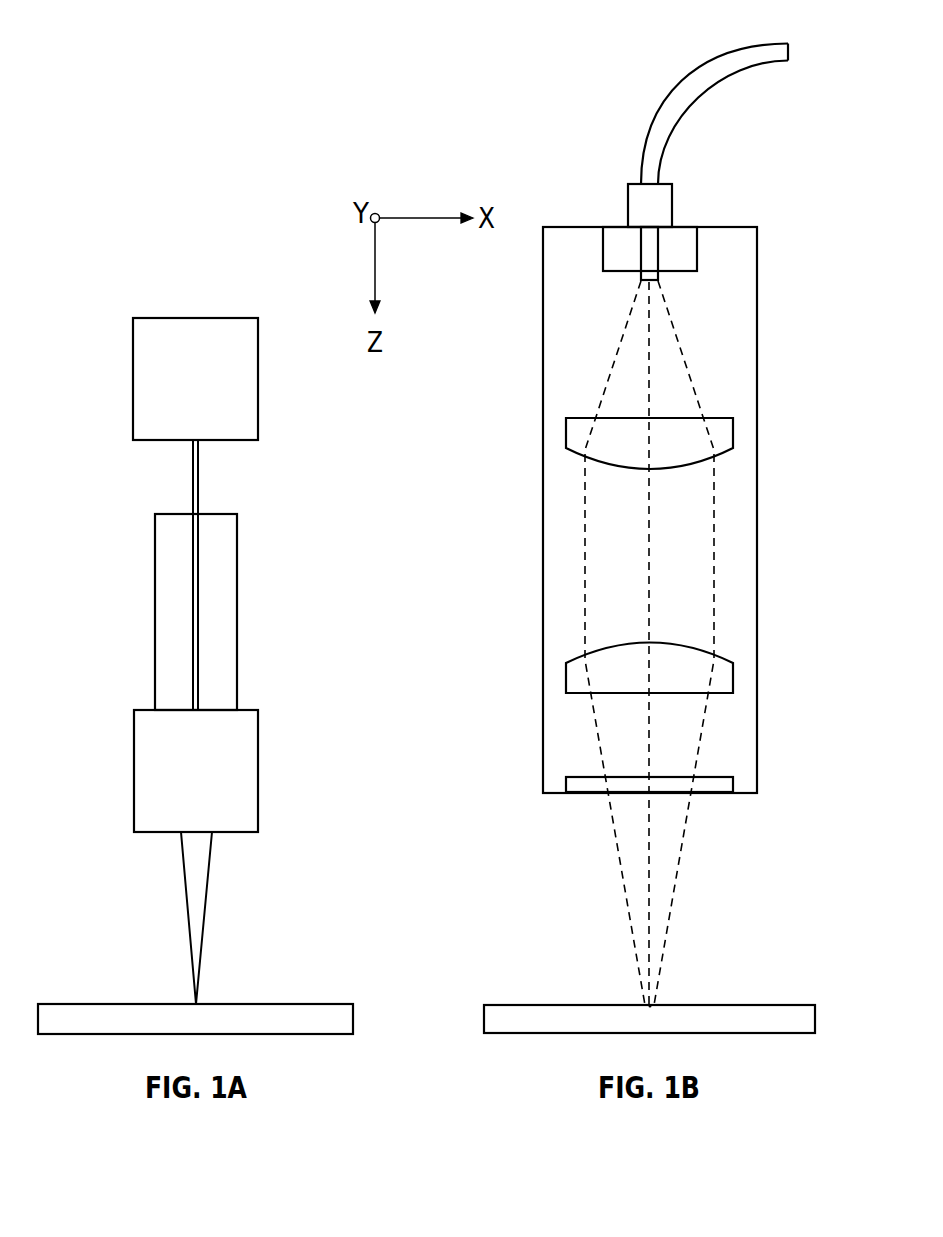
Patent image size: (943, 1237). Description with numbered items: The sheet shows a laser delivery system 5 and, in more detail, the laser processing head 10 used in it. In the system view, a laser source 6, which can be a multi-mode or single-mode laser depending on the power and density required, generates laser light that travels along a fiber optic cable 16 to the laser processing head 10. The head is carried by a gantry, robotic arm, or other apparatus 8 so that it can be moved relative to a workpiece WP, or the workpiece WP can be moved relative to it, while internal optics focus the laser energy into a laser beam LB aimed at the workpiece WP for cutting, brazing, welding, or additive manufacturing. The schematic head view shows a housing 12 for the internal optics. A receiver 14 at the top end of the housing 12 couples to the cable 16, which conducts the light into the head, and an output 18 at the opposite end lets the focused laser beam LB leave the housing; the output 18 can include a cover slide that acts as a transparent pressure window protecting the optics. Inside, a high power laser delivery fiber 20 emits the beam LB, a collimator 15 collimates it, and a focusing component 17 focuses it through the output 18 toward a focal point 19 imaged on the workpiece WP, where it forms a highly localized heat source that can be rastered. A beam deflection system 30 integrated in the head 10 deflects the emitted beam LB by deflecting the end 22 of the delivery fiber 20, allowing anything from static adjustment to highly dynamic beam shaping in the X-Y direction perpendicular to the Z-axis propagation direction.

In FIG. 1A, the laser delivery system 5 is at (105, 251).
In FIG. 1A, the laser source 6 is at (133, 381).
In FIG. 1A, the apparatus 8 is at (155, 584).
In FIG. 1A, the laser processing head 10 is at (134, 768).
In FIG. 1B, the laser processing head 10 is at (503, 141).
In FIG. 1B, the housing 12 is at (543, 452).
In FIG. 1B, the receiver 14 is at (689, 198).
In FIG. 1B, the collimator 15 is at (733, 432).
In FIG. 1A, the fiber optic cable 16 is at (193, 490).
In FIG. 1B, the fiber optic cable 16 is at (710, 64).
In FIG. 1B, the focusing component 17 is at (733, 678).
In FIG. 1B, the output 18 is at (733, 785).
In FIG. 1B, the focal point 19 is at (650, 1019).
In FIG. 1B, the high power laser delivery fiber 20 is at (640, 240).
In FIG. 1B, the end of the delivery fiber 22 is at (660, 278).
In FIG. 1B, the beam deflection system 30 is at (716, 251).
In FIG. 1A, the laser beam LB is at (186, 907).
In FIG. 1B, the laser beam LB is at (678, 872).
In FIG. 1A, the workpiece WP is at (68, 1004).
In FIG. 1B, the workpiece WP is at (537, 1004).